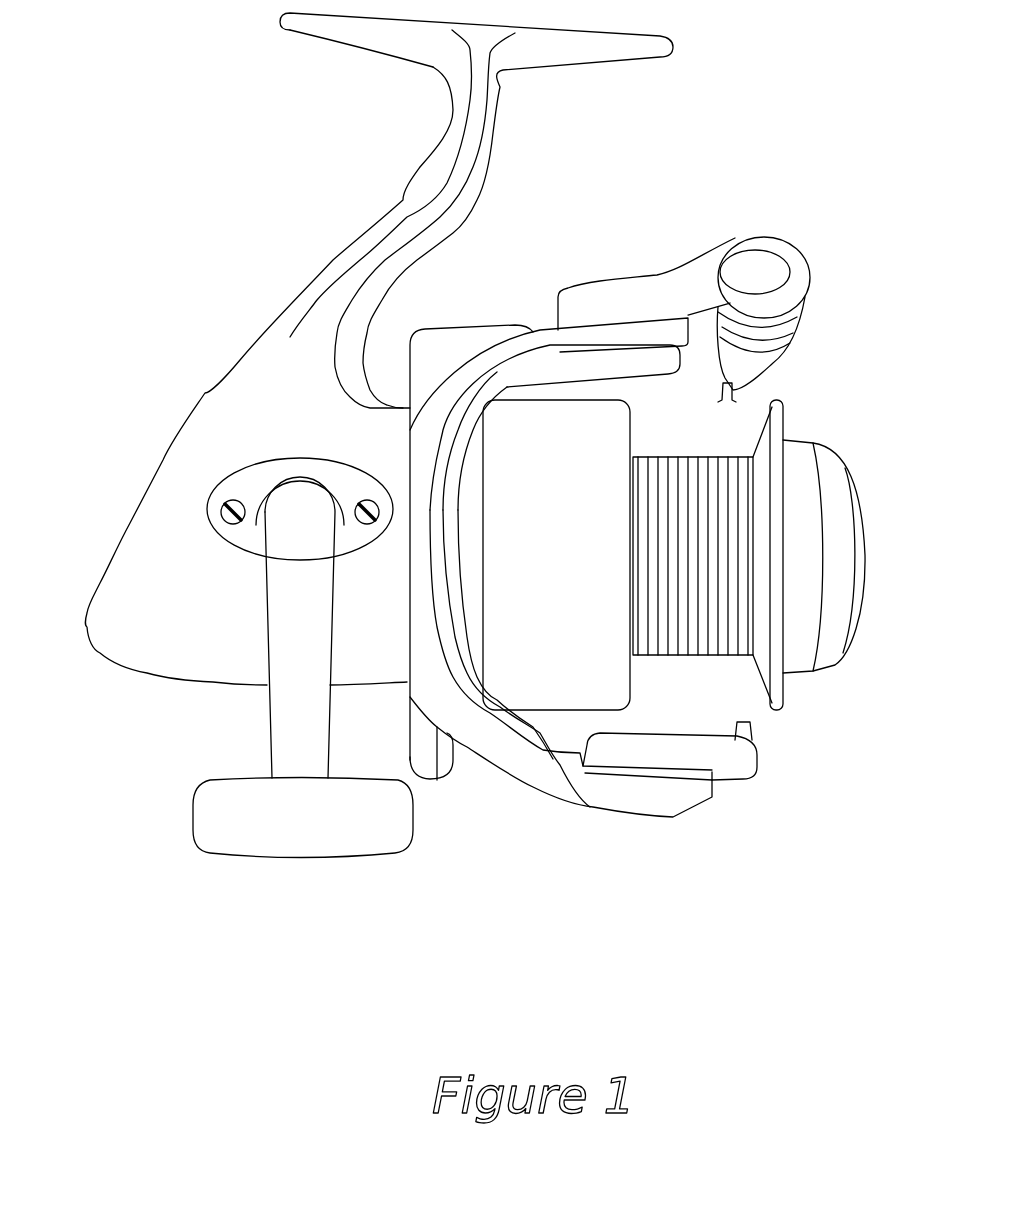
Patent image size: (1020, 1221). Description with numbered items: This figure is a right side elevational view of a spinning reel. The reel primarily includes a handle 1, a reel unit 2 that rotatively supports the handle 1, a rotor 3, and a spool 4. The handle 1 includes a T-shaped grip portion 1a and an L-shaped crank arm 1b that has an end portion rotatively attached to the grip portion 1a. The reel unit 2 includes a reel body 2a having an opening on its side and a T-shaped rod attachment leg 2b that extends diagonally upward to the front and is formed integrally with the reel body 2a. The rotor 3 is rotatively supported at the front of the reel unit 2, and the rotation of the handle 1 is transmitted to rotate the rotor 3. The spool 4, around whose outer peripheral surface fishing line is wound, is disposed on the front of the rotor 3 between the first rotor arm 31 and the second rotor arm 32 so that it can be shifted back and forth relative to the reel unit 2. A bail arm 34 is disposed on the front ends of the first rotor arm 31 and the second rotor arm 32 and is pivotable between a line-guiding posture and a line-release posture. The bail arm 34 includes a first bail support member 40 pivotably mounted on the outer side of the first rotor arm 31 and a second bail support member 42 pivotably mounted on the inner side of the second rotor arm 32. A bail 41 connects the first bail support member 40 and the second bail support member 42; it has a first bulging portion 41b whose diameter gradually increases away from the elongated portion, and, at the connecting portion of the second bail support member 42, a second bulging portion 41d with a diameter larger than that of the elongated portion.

The handle 1 is at (303, 693).
The grip portion 1a is at (307, 833).
The crank arm 1b is at (310, 718).
The reel unit 2 is at (380, 349).
The reel body 2a is at (178, 460).
The rod attachment leg 2b is at (283, 300).
The rotor 3 is at (561, 537).
The first rotor arm 31 is at (602, 338).
The second rotor arm 32 is at (613, 793).
The bail arm 34 is at (727, 512).
The spool 4 is at (684, 450).
The first bail support member 40 is at (705, 260).
The bail 41 is at (782, 556).
The first bulging portion 41b is at (740, 390).
The second bulging portion 41d is at (750, 733).
The second bail support member 42 is at (732, 768).